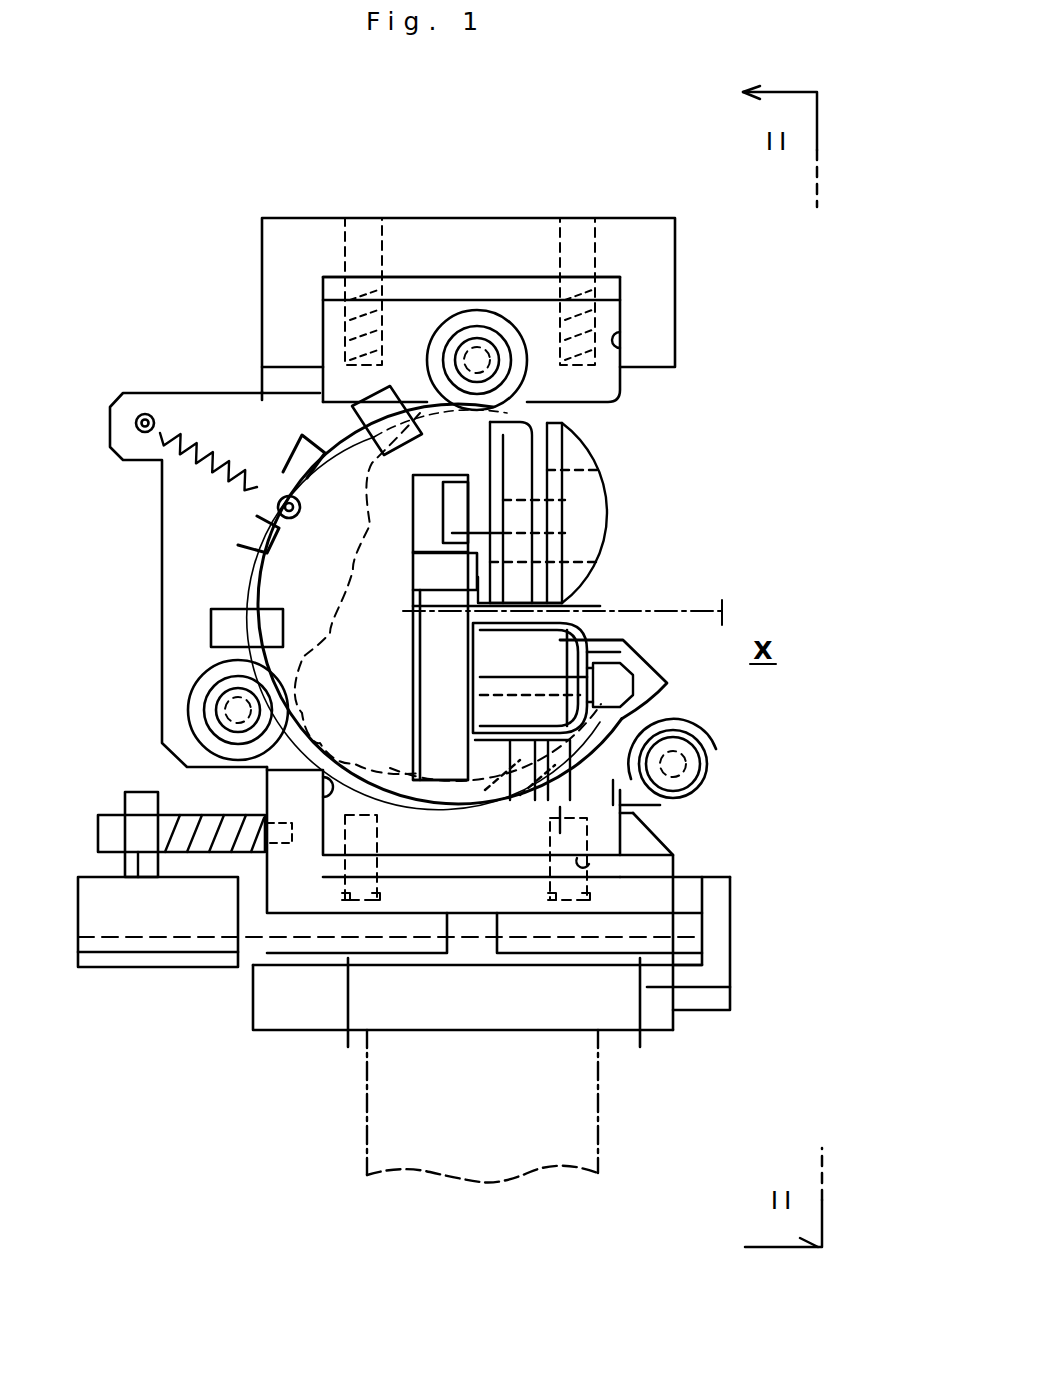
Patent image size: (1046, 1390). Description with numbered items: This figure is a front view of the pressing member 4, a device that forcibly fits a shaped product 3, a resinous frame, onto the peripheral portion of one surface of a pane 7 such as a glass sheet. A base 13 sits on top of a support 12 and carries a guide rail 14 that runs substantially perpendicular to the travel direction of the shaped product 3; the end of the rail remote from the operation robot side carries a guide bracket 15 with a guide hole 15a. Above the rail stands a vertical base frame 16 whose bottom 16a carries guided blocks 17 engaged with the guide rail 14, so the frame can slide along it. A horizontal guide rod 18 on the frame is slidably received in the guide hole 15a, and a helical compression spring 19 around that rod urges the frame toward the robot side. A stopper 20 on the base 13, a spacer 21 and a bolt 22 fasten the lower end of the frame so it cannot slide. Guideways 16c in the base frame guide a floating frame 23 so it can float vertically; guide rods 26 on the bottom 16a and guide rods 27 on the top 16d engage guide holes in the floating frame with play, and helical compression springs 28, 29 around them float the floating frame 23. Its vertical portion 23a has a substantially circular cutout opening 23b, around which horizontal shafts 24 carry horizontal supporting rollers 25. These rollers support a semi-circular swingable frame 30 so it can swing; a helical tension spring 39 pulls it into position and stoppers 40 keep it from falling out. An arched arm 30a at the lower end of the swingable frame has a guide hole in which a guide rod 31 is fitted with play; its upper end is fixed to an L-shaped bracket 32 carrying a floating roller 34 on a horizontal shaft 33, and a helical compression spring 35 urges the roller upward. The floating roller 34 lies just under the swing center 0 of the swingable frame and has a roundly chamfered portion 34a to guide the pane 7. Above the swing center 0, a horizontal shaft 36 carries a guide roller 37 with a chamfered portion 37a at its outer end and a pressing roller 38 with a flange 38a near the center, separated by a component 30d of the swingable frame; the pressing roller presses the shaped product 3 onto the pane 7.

The pressing member 4 is at (197, 204).
The vertical base frame 16 is at (355, 208).
The top 16d is at (418, 240).
The bottom 16a is at (470, 1000).
The guideways 16c is at (318, 325).
The helical compression spring 29 is at (345, 290).
The guide rod 27 is at (355, 252).
The helical compression spring 28 is at (378, 873).
The guide rod 26 is at (345, 895).
The horizontal shaft 24 is at (477, 350).
The horizontal supporting roller 25 is at (495, 330).
The floating frame 23 is at (158, 643).
The vertical portion 23a is at (190, 571).
The cutout opening 23b is at (448, 597).
The helical tension spring 39 is at (232, 445).
The swingable frame 30 is at (255, 542).
The arched arm 30a is at (670, 695).
The component 30d is at (545, 545).
The stoppers 40 is at (352, 400).
The swing center 0 is at (425, 598).
The pressing roller 38 is at (515, 452).
The flange 38a is at (500, 570).
The roundly chamfered portion 37a is at (590, 450).
The guide roller 37 is at (560, 497).
The horizontal shaft 36 is at (600, 470).
The shaped product 3 is at (525, 600).
The floating roller 34 is at (507, 638).
The roundly chamfered portion 34a is at (590, 660).
The bracket 32 is at (440, 666).
The horizontal shaft 33 is at (605, 690).
The pane 7 is at (740, 611).
The helical compression spring 35 is at (527, 823).
The guide rod 31 is at (478, 820).
The bolt 22 is at (690, 913).
The spacer 21 is at (730, 987).
The stopper 20 is at (718, 997).
The guide rail 14 is at (235, 960).
The guide bracket 15 is at (170, 975).
The guide hole 15a is at (140, 860).
The guide rod 18 is at (185, 850).
The helical compression spring 19 is at (215, 850).
The base 13 is at (300, 1012).
The guided blocks 17 is at (385, 1000).
The support 12 is at (385, 1185).